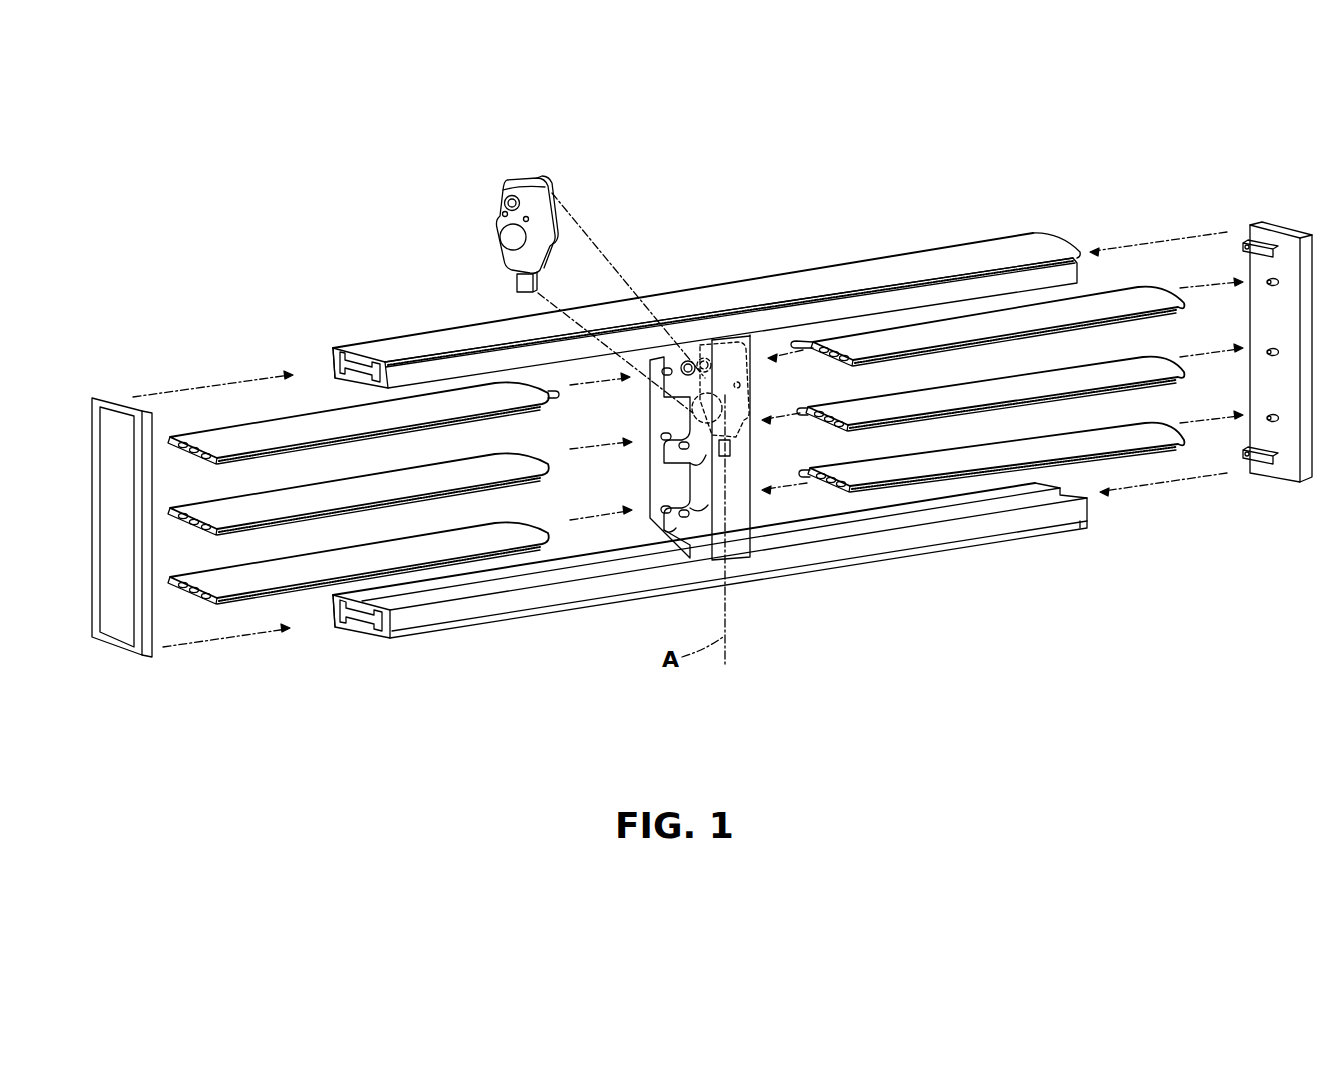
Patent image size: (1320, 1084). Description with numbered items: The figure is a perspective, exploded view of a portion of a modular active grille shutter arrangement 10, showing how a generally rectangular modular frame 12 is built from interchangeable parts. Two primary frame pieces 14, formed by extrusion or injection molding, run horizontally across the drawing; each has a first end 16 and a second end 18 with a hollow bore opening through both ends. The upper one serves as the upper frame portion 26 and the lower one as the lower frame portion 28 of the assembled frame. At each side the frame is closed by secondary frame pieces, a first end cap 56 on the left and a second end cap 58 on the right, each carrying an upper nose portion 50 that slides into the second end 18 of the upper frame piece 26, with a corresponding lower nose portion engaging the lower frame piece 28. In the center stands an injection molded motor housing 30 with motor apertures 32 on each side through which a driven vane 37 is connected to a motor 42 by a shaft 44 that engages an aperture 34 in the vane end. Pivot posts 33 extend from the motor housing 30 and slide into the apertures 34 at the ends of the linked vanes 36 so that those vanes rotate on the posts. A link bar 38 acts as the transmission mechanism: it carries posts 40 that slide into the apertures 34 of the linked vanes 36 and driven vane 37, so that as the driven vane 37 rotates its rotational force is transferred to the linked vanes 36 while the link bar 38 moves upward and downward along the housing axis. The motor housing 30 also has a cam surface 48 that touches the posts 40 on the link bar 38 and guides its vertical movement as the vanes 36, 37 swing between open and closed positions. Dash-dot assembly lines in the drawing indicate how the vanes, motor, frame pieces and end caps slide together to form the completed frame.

The modular active grille shutter arrangement 10 is at (278, 212).
The modular frame 12 is at (849, 260).
The primary frame piece 14 is at (801, 290).
The first end 16 is at (335, 380).
The second end 18 is at (1062, 236).
The upper frame portion 26 is at (975, 255).
The lower frame portion 28 is at (1023, 520).
The motor housing 30 is at (737, 542).
The motor aperture 32 is at (686, 360).
The pivot post 33 is at (690, 600).
The aperture 34 is at (804, 422).
The linked vane 36 is at (937, 393).
The driven vane 37 is at (235, 438).
The link bar 38 is at (655, 407).
The post 40 is at (660, 437).
The motor 42 is at (548, 190).
The shaft 44 is at (550, 390).
The cam surface 48 is at (680, 528).
The upper nose portion 50 is at (1275, 247).
The first end cap 56 is at (130, 533).
The second end cap 58 is at (1285, 395).